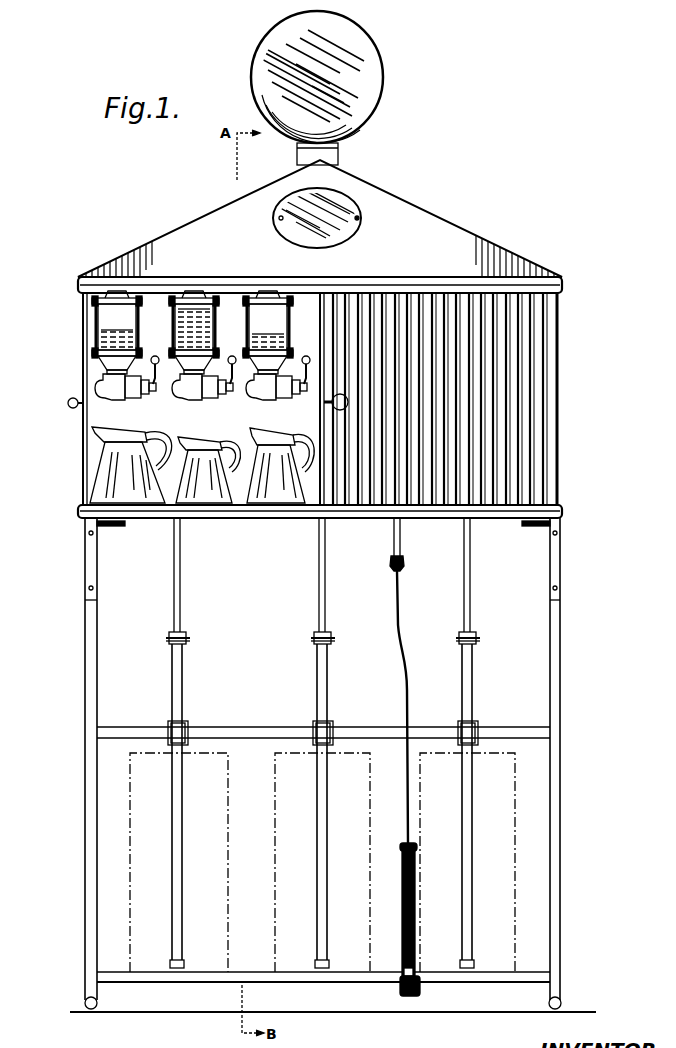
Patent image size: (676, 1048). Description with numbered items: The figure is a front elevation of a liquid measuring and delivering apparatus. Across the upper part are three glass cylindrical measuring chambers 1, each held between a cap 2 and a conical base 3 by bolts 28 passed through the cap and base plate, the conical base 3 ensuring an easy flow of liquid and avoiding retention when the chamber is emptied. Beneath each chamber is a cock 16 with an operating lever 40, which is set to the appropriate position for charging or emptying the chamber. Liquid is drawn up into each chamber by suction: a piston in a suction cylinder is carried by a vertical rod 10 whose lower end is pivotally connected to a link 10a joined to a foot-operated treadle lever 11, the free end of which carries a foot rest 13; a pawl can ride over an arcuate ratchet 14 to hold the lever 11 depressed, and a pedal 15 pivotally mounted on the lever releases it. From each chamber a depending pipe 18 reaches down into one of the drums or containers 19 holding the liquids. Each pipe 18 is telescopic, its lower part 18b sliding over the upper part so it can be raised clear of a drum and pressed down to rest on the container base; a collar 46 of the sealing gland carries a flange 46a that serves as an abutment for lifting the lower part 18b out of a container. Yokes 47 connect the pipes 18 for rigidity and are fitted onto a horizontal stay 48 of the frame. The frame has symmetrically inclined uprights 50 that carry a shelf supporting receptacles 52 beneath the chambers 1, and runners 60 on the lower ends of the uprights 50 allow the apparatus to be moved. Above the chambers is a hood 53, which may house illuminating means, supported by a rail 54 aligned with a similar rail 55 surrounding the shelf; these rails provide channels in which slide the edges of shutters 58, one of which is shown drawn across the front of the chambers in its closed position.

The measuring chamber 1 is at (100, 322).
The cap 2 is at (100, 305).
The base 3 is at (100, 362).
The vertical rod 10 is at (402, 552).
The link 10a is at (410, 694).
The treadle lever 11 is at (402, 922).
The foot rest 13 is at (418, 985).
The arcuate ratchet 14 is at (400, 890).
The pedal 15 is at (414, 972).
The cock 16 is at (118, 396).
The depending pipe 18 is at (181, 600).
The lower pipe part 18b is at (183, 838).
The container 19 is at (148, 862).
The bolt 28 is at (140, 329).
The lever 40 is at (166, 372).
The collar 46 is at (187, 636).
The flange 46a is at (166, 641).
The yoke 47 is at (168, 727).
The horizontal stay 48 is at (246, 728).
The upright 50 is at (562, 812).
The receptacle 52 is at (96, 462).
The hood 53 is at (455, 230).
The rail 54 is at (563, 285).
The rail 55 is at (565, 512).
The shutter 58 is at (558, 410).
The runner 60 is at (98, 1003).